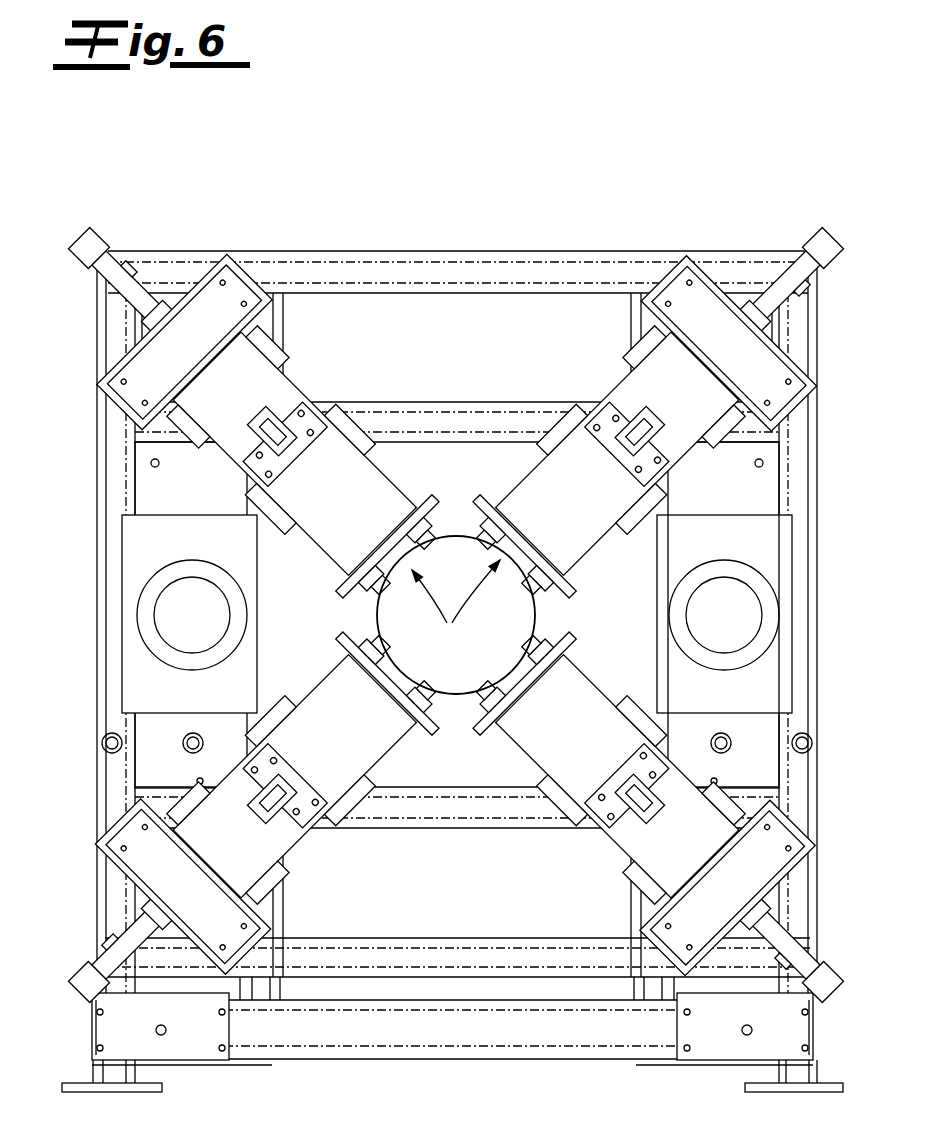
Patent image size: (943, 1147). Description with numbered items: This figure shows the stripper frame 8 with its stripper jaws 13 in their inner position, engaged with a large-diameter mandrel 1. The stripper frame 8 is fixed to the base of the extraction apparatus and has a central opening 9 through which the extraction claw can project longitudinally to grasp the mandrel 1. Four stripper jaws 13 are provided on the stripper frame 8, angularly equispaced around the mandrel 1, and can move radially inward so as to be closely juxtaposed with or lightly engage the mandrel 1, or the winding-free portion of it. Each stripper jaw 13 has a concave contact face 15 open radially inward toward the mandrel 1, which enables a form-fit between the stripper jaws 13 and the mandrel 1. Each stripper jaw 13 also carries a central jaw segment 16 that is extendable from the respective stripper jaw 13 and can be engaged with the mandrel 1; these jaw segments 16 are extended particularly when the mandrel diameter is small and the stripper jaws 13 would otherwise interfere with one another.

The mandrel 1 is at (378, 609).
The stripper frame 8 is at (573, 250).
The central opening 9 is at (607, 625).
The stripper jaws 13 is at (382, 525).
The contact face 15 is at (456, 612).
The jaw segment 16 is at (520, 553).